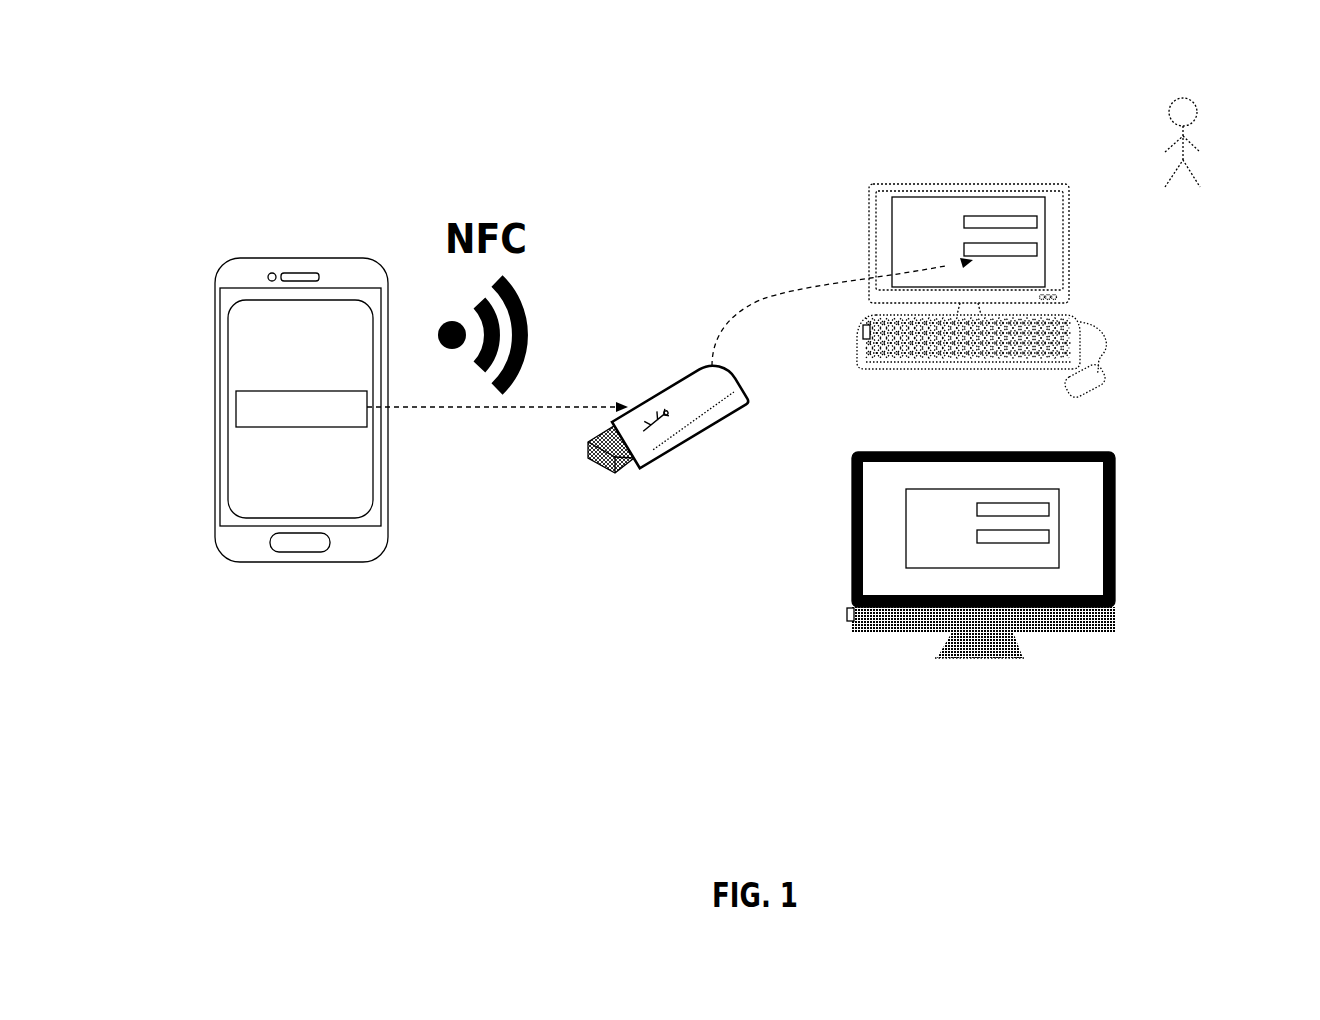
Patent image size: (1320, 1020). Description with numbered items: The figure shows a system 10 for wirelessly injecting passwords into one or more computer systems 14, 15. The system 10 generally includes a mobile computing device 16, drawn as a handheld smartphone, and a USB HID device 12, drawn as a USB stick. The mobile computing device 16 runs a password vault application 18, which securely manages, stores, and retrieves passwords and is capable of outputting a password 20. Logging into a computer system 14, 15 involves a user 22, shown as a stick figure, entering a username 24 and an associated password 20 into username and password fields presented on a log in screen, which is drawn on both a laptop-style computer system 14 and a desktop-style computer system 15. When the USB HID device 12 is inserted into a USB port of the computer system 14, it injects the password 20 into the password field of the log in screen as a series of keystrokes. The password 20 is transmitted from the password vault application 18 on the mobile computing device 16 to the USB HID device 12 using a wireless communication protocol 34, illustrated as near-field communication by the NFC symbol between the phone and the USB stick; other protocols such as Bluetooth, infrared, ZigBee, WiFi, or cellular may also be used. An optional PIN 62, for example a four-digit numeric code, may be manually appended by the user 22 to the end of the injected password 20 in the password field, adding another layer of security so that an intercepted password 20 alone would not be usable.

The system 10 is at (520, 150).
The USB HID device 12 is at (688, 383).
The computer system 14 is at (869, 225).
The computer system 15 is at (852, 525).
The mobile computing device 16 is at (215, 296).
The password vault application 18 is at (360, 371).
The password 20 is at (351, 418).
The user 22 is at (1189, 129).
The username 24 is at (1008, 204).
The wireless communication protocol 34 is at (518, 297).
The PIN 62 is at (1020, 238).